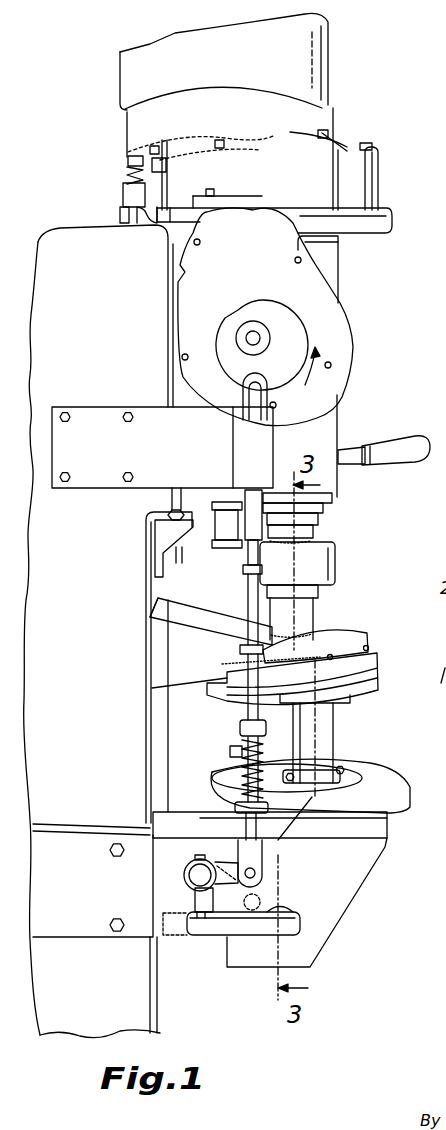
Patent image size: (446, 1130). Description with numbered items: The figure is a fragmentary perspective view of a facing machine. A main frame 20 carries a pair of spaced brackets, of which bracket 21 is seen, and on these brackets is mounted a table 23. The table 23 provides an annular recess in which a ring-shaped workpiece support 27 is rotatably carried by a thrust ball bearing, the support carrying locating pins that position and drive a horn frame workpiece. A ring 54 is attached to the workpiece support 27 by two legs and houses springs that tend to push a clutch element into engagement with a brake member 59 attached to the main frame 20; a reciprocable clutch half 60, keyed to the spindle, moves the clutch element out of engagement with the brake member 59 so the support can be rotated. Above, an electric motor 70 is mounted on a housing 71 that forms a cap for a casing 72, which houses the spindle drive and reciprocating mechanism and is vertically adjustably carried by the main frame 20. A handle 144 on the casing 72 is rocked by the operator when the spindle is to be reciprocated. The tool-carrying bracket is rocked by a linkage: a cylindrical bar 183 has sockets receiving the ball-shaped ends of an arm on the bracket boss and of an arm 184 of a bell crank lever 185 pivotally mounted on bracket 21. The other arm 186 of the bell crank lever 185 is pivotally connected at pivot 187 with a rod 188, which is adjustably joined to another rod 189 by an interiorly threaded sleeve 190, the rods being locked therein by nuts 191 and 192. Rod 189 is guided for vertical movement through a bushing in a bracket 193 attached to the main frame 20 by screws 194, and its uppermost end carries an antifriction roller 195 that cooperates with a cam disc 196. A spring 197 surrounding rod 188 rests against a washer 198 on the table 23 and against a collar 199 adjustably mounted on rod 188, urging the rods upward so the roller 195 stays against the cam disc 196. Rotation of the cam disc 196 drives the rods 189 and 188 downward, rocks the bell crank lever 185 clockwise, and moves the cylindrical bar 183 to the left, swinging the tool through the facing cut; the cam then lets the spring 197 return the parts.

The main frame 20 is at (96, 729).
The bracket 21 is at (350, 894).
The table 23 is at (377, 832).
The workpiece support 27 is at (347, 768).
The ring 54 is at (370, 683).
The brake member 59 is at (160, 668).
The clutch half 60 is at (306, 620).
The electric motor 70 is at (307, 46).
The housing 71 is at (313, 157).
The casing 72 is at (328, 262).
The handle 144 is at (388, 440).
The cylindrical bar 183 is at (222, 930).
The arm 184 is at (203, 900).
The bell crank lever 185 is at (186, 864).
The arm 186 is at (233, 863).
The pivot 187 is at (256, 873).
The rod 188 is at (246, 700).
The rod 189 is at (247, 555).
The sleeve 190 is at (246, 590).
The nut 191 is at (240, 650).
The nut 192 is at (262, 571).
The bracket 193 is at (160, 405).
The screws 194 is at (126, 423).
The antifriction roller 195 is at (245, 380).
The cam disc 196 is at (250, 318).
The spring 197 is at (232, 768).
The washer 198 is at (236, 806).
The collar 199 is at (240, 730).